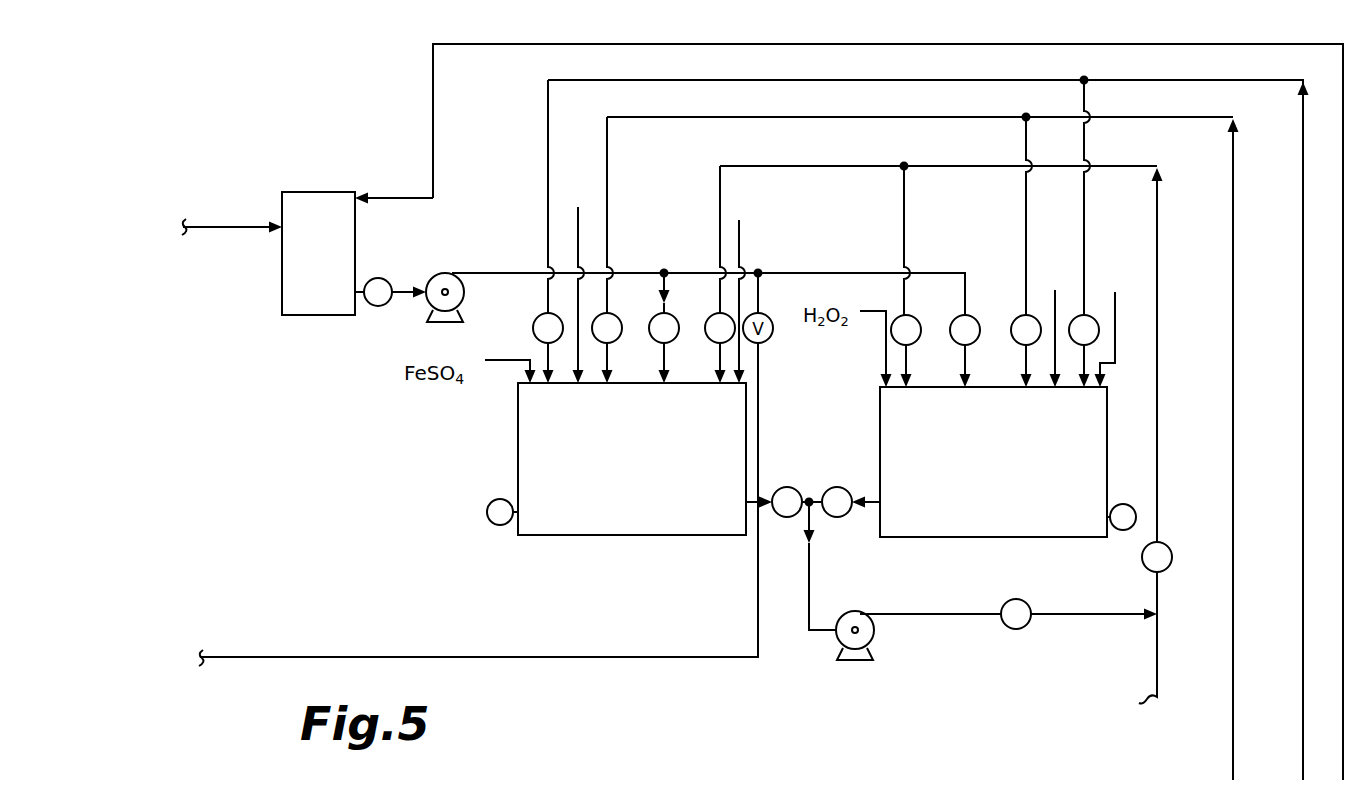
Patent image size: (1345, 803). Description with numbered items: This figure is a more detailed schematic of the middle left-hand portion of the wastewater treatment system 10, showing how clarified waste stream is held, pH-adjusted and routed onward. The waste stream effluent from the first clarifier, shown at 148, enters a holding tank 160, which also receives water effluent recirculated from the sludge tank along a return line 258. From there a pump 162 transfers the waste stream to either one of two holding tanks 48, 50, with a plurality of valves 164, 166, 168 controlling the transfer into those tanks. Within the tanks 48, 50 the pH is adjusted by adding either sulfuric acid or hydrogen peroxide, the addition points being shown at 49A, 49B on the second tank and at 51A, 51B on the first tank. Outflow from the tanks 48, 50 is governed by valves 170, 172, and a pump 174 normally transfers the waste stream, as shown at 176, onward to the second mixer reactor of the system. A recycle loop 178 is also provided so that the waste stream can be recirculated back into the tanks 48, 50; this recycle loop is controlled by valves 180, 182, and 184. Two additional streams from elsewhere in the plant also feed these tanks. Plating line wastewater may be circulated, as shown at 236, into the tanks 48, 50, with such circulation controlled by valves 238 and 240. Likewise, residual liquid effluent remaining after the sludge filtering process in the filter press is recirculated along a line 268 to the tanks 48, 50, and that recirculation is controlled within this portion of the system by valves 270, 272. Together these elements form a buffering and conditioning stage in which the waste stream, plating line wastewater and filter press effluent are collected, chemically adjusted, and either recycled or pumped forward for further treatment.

The treatment system 10 is at (342, 487).
The holding tank 48 is at (654, 538).
The holding tank 50 is at (985, 538).
The sulfuric acid or hydrogen peroxide addition point 49A is at (1052, 352).
The sulfuric acid or hydrogen peroxide addition point 49B is at (1115, 302).
The sulfuric acid or hydrogen peroxide addition point 51A is at (578, 225).
The sulfuric acid or hydrogen peroxide addition point 51B is at (739, 240).
The waste stream effluent 148 is at (229, 225).
The holding tank 160 is at (318, 192).
The pump 162 is at (450, 273).
The valve 164 is at (378, 278).
The valve 166 is at (665, 312).
The valve 168 is at (968, 314).
The valve 170 is at (783, 490).
The valve 172 is at (838, 490).
The pump 174 is at (874, 630).
The waste stream transfer line 176 is at (1090, 603).
The recycle loop 178 is at (872, 166).
The valve 180 is at (1168, 548).
The valve 182 is at (921, 322).
The valve 184 is at (715, 302).
The plating line wastewater circulation line 236 is at (878, 80).
The valve 238 is at (533, 336).
The valve 240 is at (1088, 314).
The recycle line 258 is at (433, 127).
The line 268 is at (881, 116).
The valve 270 is at (612, 312).
The valve 272 is at (1022, 316).